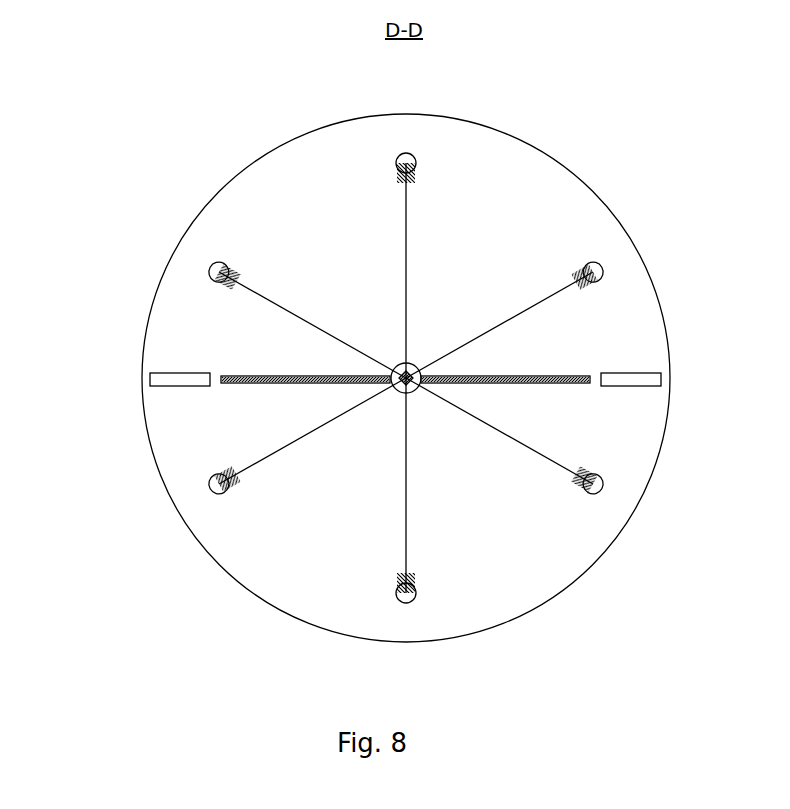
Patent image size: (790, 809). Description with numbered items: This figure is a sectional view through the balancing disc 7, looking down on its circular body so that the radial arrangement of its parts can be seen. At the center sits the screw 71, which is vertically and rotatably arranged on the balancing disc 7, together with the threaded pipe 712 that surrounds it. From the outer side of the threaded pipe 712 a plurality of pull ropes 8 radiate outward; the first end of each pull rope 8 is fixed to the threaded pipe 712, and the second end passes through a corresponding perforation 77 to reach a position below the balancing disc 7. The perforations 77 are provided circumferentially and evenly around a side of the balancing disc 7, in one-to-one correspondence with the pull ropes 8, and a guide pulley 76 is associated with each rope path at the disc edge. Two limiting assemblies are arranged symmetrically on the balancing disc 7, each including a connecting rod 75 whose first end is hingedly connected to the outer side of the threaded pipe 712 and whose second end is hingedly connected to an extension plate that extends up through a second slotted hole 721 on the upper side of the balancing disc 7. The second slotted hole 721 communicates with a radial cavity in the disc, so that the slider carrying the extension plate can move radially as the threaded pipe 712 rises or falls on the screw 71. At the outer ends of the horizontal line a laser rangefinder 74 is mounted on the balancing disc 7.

The balancing disc 7 is at (348, 608).
The pull rope 8 is at (275, 302).
The screw 71 is at (398, 366).
The threaded pipe 712 is at (416, 366).
The second slotted hole 721 is at (256, 376).
The laser rangefinder 74 is at (167, 373).
The connecting rod 75 is at (272, 384).
The guide pulley 76 is at (414, 172).
The perforation 77 is at (591, 264).